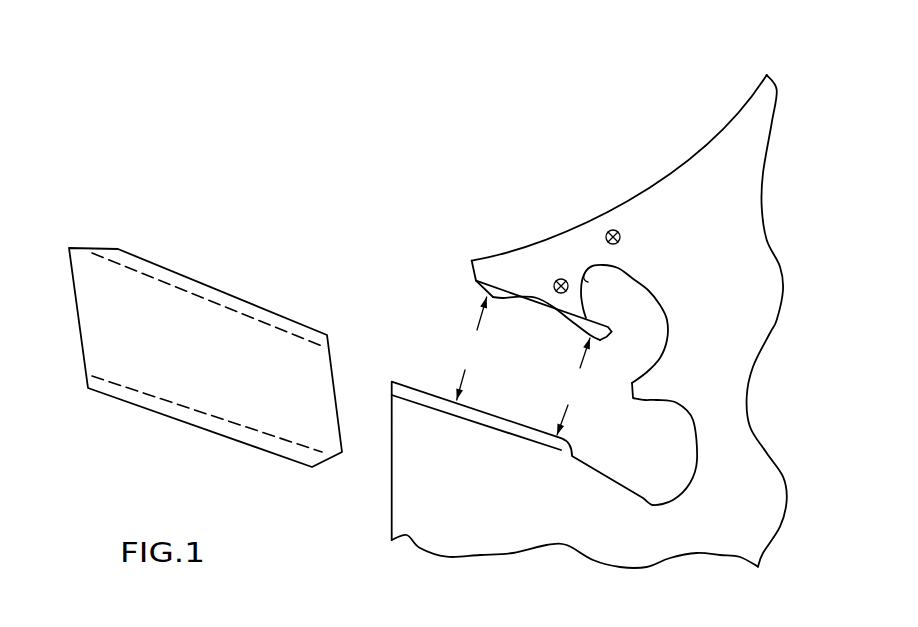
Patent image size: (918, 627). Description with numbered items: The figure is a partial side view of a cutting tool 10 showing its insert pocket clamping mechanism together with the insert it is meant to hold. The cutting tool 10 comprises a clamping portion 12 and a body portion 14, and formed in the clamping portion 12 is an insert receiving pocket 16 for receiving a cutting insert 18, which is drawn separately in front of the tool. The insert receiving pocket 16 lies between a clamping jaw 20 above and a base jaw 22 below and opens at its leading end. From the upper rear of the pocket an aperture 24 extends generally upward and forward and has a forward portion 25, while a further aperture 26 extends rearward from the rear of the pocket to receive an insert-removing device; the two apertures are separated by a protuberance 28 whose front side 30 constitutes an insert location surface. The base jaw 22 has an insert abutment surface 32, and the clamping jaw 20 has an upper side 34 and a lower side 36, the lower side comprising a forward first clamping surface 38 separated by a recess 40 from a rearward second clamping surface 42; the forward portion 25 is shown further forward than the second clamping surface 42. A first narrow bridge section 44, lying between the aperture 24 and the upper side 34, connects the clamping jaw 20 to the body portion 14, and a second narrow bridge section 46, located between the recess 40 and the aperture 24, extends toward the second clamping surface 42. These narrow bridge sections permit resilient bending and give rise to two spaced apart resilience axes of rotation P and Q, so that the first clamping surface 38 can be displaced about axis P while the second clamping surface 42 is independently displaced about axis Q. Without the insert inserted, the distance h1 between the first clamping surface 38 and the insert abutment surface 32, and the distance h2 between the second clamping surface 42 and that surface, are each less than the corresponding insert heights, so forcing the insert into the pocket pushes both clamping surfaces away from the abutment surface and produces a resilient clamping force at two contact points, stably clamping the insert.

The cutting tool 10 is at (295, 87).
The clamping portion 12 is at (525, 150).
The body portion 14 is at (752, 132).
The insert receiving pocket 16 is at (385, 318).
The cutting insert 18 is at (145, 227).
The clamping jaw 20 is at (502, 273).
The base jaw 22 is at (447, 438).
The aperture 24 is at (623, 281).
The forward portion 25 is at (593, 266).
The further aperture 26 is at (660, 477).
The protuberance 28 is at (643, 391).
The front side 30 is at (628, 386).
The insert abutment surface 32 is at (433, 392).
The upper side 34 is at (465, 245).
The lower side 36 is at (478, 295).
The first clamping surface 38 is at (493, 297).
The recess 40 is at (550, 303).
The second clamping surface 42 is at (598, 340).
The first narrow bridge section 44 is at (593, 266).
The second narrow bridge section 46 is at (583, 312).
The resilience axis of rotation Q is at (546, 280).
The resilience axis of rotation P is at (618, 225).
The distance h1 is at (471, 348).
The distance h2 is at (580, 389).